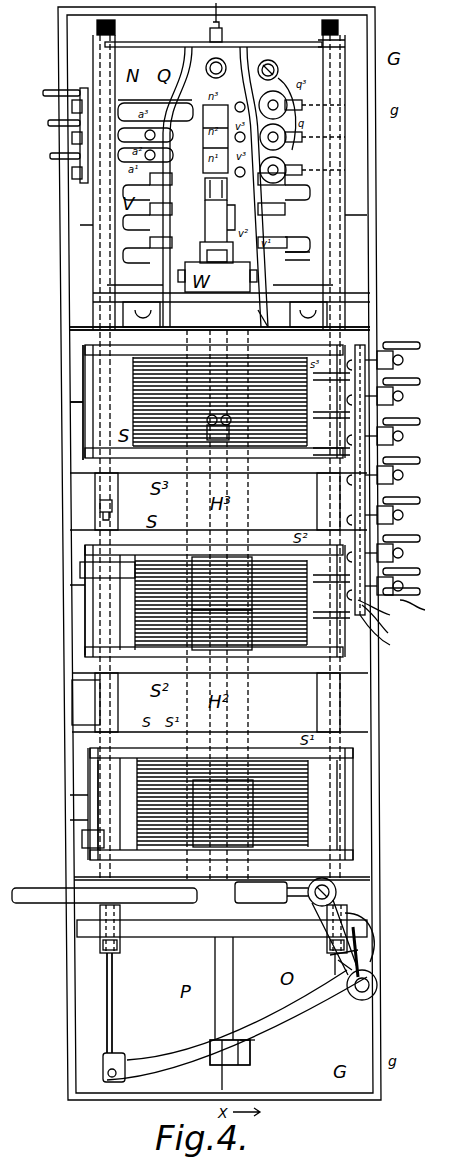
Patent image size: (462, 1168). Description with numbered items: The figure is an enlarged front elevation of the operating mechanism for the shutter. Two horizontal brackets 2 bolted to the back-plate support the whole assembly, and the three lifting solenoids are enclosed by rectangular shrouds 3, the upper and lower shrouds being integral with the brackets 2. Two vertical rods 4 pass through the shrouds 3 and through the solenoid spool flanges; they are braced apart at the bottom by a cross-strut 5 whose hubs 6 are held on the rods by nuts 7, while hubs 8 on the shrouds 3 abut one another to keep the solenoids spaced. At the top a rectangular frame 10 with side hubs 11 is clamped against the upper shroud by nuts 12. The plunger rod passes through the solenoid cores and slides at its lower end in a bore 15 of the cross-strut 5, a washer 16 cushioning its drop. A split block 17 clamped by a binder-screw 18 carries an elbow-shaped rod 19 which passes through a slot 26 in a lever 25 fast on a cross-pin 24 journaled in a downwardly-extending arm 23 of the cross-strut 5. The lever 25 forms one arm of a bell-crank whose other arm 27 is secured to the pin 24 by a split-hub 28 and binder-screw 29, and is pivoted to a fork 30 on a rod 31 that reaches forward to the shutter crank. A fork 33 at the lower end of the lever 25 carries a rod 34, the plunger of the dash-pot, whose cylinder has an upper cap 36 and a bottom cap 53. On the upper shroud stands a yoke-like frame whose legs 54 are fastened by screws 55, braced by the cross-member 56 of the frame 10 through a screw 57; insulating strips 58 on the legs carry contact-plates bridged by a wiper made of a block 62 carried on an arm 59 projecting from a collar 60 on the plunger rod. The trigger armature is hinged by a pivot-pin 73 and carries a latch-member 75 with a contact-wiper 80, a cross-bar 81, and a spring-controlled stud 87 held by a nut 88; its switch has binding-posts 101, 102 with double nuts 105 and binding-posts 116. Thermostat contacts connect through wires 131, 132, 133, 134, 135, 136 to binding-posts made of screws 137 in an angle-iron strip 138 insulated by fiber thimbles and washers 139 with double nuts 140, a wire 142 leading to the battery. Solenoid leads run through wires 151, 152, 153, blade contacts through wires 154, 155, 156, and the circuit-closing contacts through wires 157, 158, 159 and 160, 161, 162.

The horizontal arms or brackets 2 is at (220, 604).
The rectangular shrouds 3 is at (80, 826).
The vertical rods 4 is at (108, 965).
The cross-strut 5 is at (222, 928).
The hubs 6 is at (347, 915).
The nuts 7 is at (330, 946).
The hubs 8 is at (340, 716).
The rectangular frame 10 is at (318, 40).
The side hubs 11 is at (345, 215).
The nuts 12 is at (97, 26).
The bore 15 is at (240, 940).
The washer 16 is at (258, 903).
The split block 17 is at (72, 703).
The binder-screw 18 is at (250, 1060).
The elbow-shaped rod 19 is at (225, 1075).
The downwardly-extending arm 23 is at (375, 932).
The cross-pin 24 is at (377, 988).
The lever 25 is at (237, 1025).
The slot 26 is at (250, 1040).
The bell-crank arm 27 is at (320, 920).
The split-hub 28 is at (362, 972).
The binder-screw 29 is at (327, 969).
The fork 30 is at (315, 903).
The rod 31 is at (104, 897).
The fork 33 is at (105, 1055).
The rod 34 is at (107, 1016).
The upper cap 36 is at (80, 569).
The bottom cap 53 is at (82, 845).
The legs 54 is at (220, 287).
The screws 55 is at (223, 314).
The cross-member 56 is at (270, 42).
The screw 57 is at (222, 30).
The insulating strips 58 is at (165, 137).
The arm 59 is at (240, 112).
The collar 60 is at (200, 250).
The block 62 is at (338, 26).
The pivot-pin 73 is at (262, 318).
The latch-member 75 is at (207, 186).
The contact-wiper 80 is at (232, 225).
The cross-bar 81 is at (312, 240).
The stud 87 is at (206, 66).
The nut 88 is at (283, 66).
The binding-post 101 is at (72, 173).
The binding-post 102 is at (72, 138).
The double nuts 105 is at (72, 106).
The binding-posts 116 is at (292, 85).
The wire 131 is at (420, 538).
The wire 132 is at (420, 500).
The wire 133 is at (420, 460).
The wire 134 is at (420, 421).
The wire 135 is at (420, 381).
The wire 136 is at (420, 345).
The screws 137 is at (420, 591).
The angle-iron strip 138 is at (389, 622).
The fiber thimbles and washers 139 is at (388, 626).
The double nuts 140 is at (427, 609).
The wire 142 is at (420, 571).
The wire 151 is at (345, 170).
The wire 152 is at (345, 135).
The wire 153 is at (345, 100).
The wire 154 is at (52, 155).
The wire 155 is at (50, 122).
The wire 156 is at (47, 92).
The wire 157 is at (123, 256).
The wire 158 is at (123, 222).
The wire 159 is at (123, 193).
The wire 160 is at (312, 256).
The wire 161 is at (312, 203).
The wire 162 is at (312, 187).